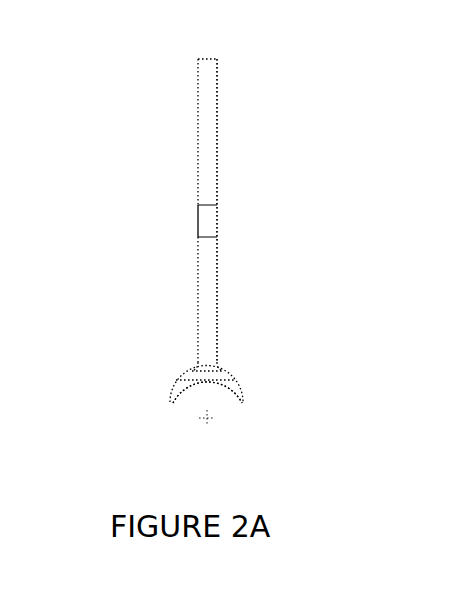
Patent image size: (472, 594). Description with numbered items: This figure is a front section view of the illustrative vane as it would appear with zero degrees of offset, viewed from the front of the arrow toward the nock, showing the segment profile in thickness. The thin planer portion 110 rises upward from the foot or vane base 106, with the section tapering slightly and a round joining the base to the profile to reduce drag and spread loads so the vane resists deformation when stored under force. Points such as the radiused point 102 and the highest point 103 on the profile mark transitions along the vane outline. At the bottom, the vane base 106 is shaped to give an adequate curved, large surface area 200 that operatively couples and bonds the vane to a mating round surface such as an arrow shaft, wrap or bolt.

The highest point on the profile 103 is at (208, 58).
The planer portion 110 is at (198, 192).
The profile point with radius 102 is at (207, 222).
The vane base 106 is at (243, 362).
The curved surface area 200 is at (203, 387).